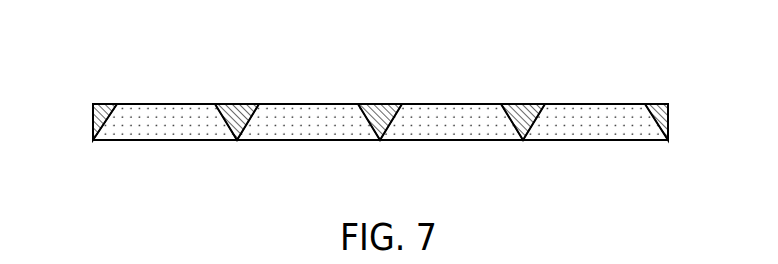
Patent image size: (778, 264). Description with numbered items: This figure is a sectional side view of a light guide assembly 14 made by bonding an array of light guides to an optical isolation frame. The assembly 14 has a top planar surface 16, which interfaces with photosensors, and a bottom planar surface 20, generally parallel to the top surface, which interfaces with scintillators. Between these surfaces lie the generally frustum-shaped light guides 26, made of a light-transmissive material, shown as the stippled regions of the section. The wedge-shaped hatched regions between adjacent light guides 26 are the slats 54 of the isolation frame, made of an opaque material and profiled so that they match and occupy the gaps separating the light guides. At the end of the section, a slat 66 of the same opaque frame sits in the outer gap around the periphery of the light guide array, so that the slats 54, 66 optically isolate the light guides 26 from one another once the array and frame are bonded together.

The light guide assembly 14 is at (113, 40).
The top planar surface 16 is at (558, 103).
The bottom planar surface 20 is at (380, 149).
The light guide 26 is at (307, 125).
The slat 54 is at (238, 103).
The slat 66 is at (655, 103).